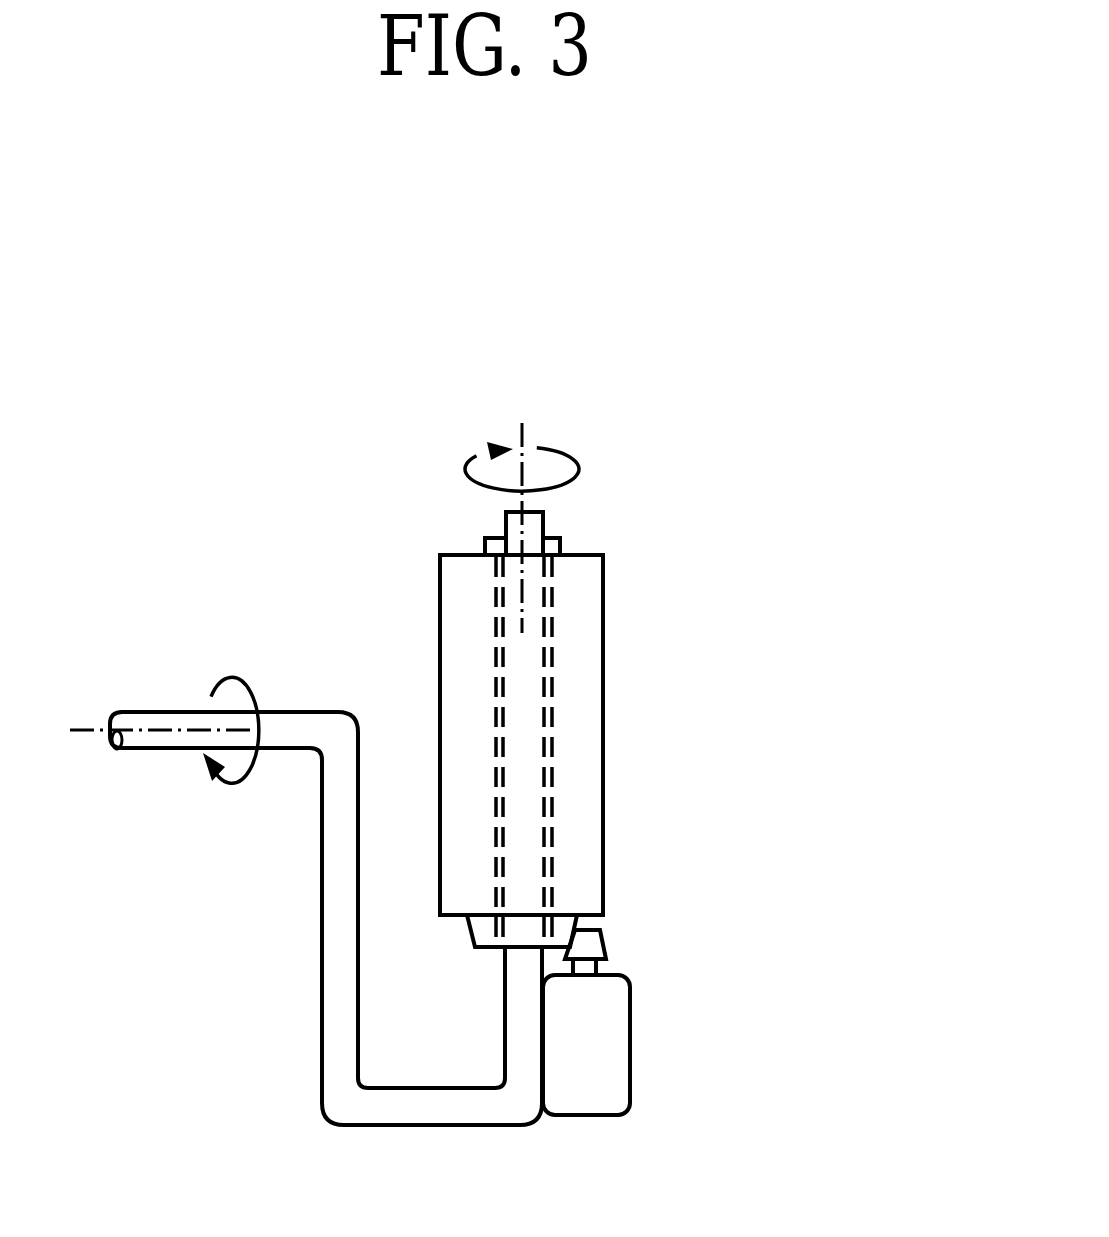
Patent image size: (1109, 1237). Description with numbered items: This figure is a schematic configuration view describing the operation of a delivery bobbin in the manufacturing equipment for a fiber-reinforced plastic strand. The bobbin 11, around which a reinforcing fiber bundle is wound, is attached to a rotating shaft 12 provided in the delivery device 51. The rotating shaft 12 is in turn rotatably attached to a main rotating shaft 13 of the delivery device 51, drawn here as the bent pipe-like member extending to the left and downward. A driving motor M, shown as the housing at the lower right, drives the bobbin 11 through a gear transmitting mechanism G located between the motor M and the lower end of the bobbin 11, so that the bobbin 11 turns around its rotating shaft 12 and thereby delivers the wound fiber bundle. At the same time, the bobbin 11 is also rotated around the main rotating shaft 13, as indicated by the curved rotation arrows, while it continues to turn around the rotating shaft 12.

The delivery device 51 is at (505, 358).
The rotating shaft 12 is at (532, 527).
The bobbin 11 is at (578, 678).
The main rotating shaft 13 is at (293, 732).
The gear transmitting mechanism G is at (603, 945).
The driving motor M is at (602, 1065).